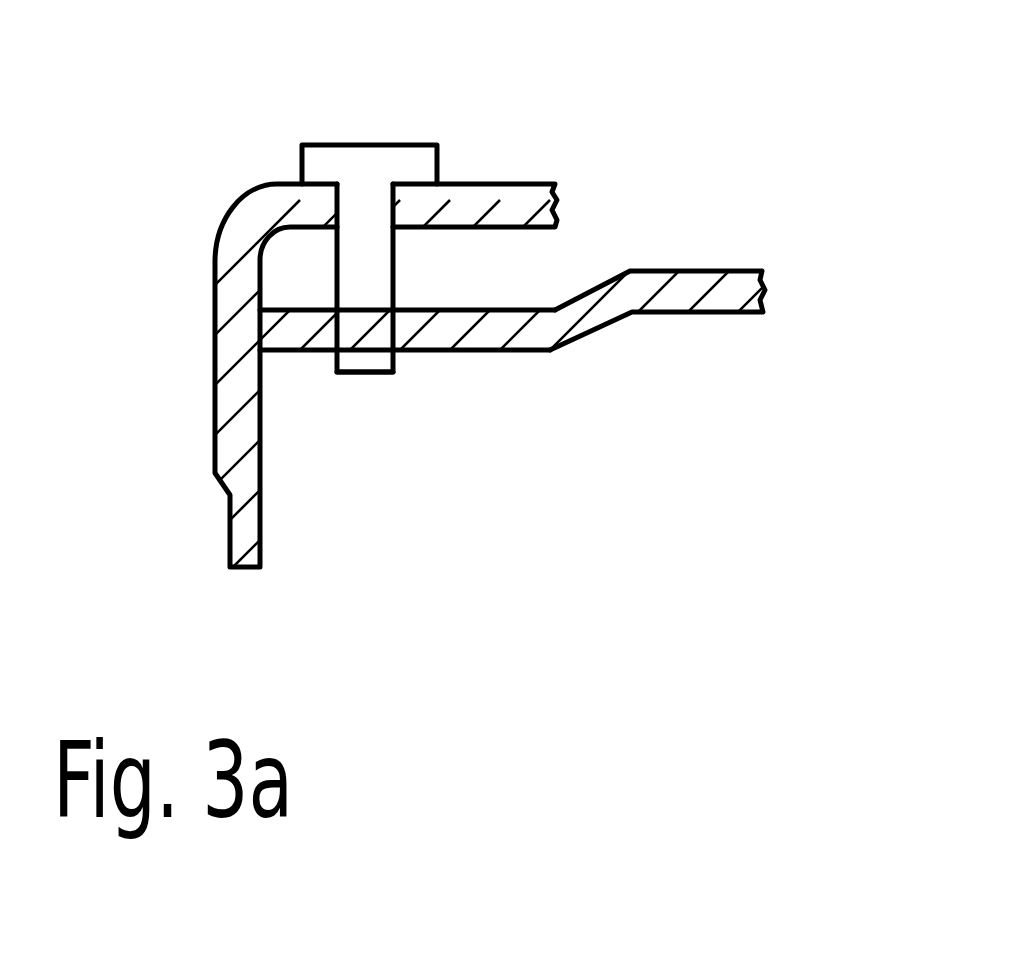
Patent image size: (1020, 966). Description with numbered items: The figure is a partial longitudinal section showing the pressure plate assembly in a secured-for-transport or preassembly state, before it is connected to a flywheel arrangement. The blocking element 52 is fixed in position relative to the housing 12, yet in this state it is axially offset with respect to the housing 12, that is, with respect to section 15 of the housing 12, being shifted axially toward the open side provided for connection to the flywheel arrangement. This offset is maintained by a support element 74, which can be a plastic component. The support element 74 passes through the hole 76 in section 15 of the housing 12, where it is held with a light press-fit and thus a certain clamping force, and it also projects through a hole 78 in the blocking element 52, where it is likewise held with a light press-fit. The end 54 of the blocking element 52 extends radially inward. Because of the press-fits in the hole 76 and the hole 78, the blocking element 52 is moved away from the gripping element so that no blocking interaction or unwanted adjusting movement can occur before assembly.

The housing 12 is at (215, 375).
The section of the housing 15 is at (540, 181).
The blocking element 52 is at (615, 322).
The end of the blocking element 54 is at (720, 268).
The support element 74 is at (387, 143).
The hole in section of the housing 76 is at (447, 183).
The hole in the blocking element 78 is at (397, 338).